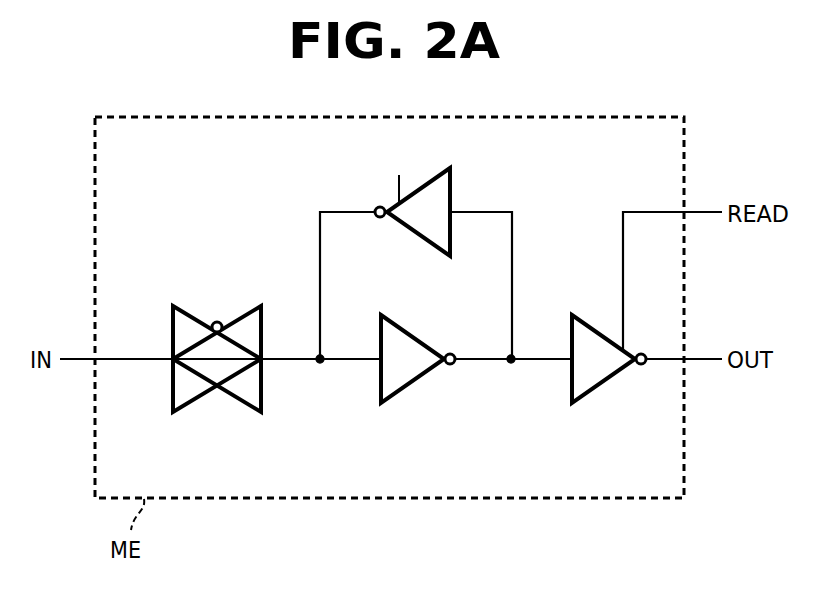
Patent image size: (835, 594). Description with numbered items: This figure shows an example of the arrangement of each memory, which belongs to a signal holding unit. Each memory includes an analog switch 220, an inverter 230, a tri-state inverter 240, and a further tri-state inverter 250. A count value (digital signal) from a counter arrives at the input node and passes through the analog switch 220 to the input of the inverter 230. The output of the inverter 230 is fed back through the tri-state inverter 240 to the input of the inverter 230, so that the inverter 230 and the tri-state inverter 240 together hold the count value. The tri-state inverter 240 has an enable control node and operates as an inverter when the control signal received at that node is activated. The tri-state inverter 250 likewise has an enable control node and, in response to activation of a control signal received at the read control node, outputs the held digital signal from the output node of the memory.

The analog switch 220 is at (200, 396).
The inverter 230 is at (390, 398).
The tri-state inverter 240 is at (452, 185).
The tri-state inverter 250 is at (580, 397).